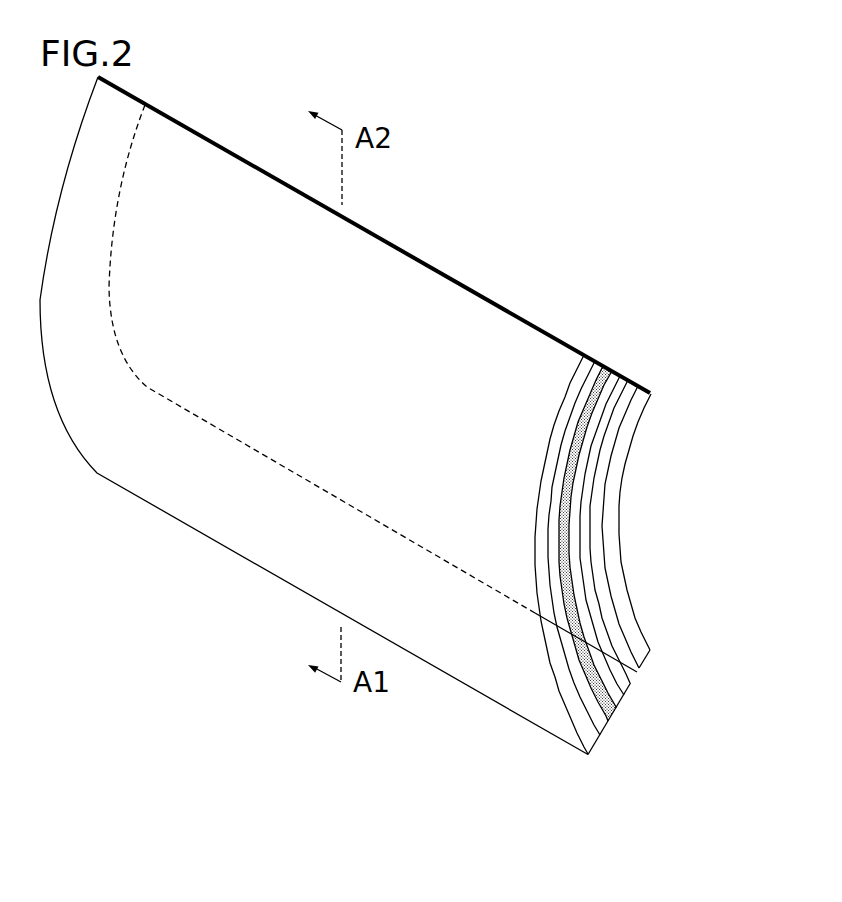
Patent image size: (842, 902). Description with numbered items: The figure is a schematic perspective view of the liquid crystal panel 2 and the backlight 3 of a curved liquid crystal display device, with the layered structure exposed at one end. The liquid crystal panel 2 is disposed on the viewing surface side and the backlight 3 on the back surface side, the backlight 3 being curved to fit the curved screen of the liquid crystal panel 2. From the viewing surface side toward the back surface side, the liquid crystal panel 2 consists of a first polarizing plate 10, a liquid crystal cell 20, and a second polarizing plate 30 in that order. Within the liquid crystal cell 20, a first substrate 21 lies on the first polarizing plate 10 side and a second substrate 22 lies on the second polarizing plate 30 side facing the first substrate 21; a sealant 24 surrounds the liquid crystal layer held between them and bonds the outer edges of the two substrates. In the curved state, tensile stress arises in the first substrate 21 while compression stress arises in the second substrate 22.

The liquid crystal panel 2 is at (697, 699).
The backlight 3 is at (610, 562).
The first polarizing plate 10 is at (586, 746).
The liquid crystal cell 20 is at (628, 704).
The first substrate 21 is at (578, 425).
The second substrate 22 is at (578, 493).
The sealant 24 is at (578, 455).
The second polarizing plate 30 is at (628, 690).